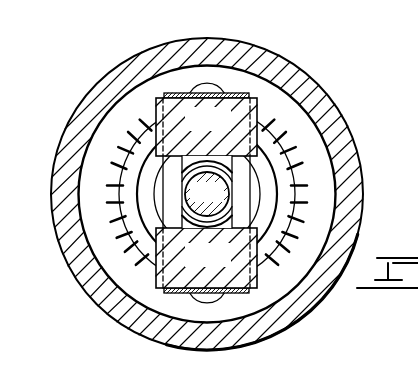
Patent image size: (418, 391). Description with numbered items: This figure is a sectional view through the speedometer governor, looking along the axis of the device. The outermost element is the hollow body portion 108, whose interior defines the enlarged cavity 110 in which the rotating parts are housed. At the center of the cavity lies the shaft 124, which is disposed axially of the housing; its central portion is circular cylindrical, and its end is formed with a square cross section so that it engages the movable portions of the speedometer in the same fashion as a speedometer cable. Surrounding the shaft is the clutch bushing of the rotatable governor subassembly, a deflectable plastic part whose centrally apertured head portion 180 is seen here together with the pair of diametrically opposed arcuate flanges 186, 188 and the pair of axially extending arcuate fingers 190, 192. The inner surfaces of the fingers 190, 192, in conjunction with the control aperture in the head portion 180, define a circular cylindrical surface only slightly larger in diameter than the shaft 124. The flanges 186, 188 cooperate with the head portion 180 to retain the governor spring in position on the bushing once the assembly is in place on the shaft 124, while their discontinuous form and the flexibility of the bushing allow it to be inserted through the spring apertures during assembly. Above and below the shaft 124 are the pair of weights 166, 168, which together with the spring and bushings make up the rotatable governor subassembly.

The body portion 108 is at (200, 41).
The enlarged cavity 110 is at (269, 85).
The shaft 124 is at (207, 194).
The weight 166 is at (222, 130).
The weight 168 is at (222, 266).
The head portion 180 is at (250, 187).
The arcuate flange 186 is at (250, 162).
The arcuate flange 188 is at (233, 221).
The arcuate finger 190 is at (182, 170).
The arcuate finger 192 is at (233, 205).